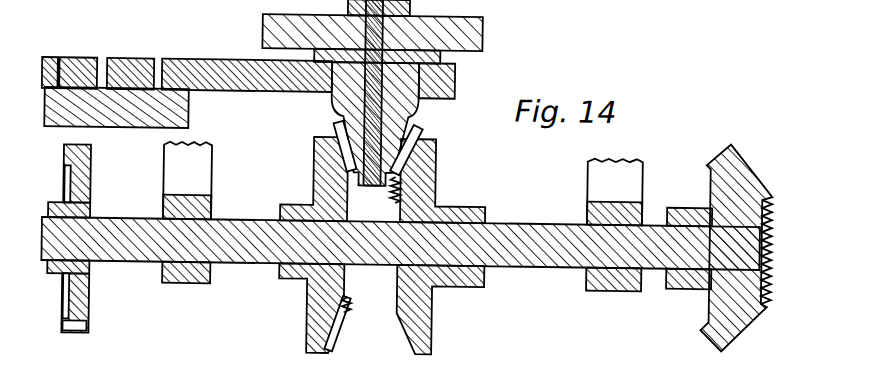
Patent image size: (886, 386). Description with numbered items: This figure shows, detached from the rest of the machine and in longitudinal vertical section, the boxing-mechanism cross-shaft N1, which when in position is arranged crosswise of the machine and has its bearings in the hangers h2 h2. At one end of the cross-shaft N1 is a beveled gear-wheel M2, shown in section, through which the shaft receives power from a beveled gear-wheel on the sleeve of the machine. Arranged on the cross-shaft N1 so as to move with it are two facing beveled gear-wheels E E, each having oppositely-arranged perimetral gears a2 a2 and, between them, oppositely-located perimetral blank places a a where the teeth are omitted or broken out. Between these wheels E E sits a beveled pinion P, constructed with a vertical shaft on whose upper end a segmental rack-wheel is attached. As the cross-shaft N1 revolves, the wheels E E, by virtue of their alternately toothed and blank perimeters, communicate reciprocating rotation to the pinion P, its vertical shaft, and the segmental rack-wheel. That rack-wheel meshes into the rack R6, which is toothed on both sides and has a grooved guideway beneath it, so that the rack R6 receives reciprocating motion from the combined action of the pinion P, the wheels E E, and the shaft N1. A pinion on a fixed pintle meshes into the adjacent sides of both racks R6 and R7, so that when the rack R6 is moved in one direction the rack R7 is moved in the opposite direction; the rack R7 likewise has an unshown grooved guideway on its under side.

The rack R7 is at (70, 60).
The rack R6 is at (131, 62).
The bar R is at (247, 64).
The hangers h2 is at (402, 211).
The beveled gear-wheels E is at (313, 167).
The perimetral blank places a is at (333, 119).
The beveled pinion P is at (424, 122).
The perimetral gears a2 is at (392, 196).
The cross-shaft N1 is at (400, 233).
The beveled gear-wheel M2 is at (729, 146).